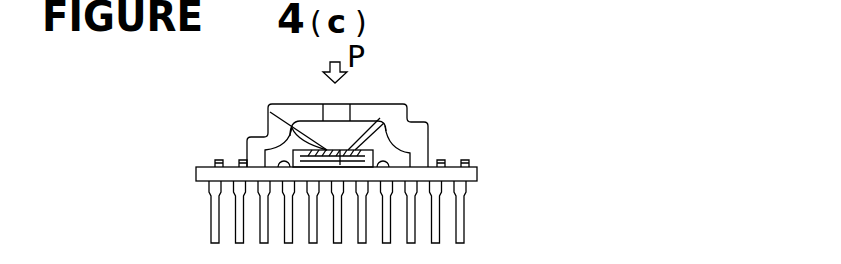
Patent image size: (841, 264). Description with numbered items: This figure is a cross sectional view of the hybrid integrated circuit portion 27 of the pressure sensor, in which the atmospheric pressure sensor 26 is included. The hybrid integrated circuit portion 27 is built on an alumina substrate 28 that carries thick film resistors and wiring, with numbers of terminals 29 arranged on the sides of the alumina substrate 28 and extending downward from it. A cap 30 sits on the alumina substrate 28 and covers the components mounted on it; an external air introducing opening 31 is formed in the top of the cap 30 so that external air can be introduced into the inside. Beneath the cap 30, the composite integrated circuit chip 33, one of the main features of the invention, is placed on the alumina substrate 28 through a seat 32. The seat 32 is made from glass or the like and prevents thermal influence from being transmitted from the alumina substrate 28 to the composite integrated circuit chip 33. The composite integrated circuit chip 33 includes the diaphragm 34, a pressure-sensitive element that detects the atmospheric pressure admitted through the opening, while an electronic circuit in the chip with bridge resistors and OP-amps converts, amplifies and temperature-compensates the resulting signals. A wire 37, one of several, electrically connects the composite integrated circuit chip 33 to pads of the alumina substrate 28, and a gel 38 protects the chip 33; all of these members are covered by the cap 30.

The atmospheric pressure sensor 26 is at (407, 108).
The hybrid integrated circuit portion 27 is at (482, 176).
The alumina substrate 28 is at (453, 167).
The terminals 29 is at (466, 222).
The cap 30 is at (408, 124).
The external air introducing opening 31 is at (342, 112).
The seat 32 is at (294, 110).
The composite integrated circuit chip 33 is at (386, 111).
The diaphragm 34 is at (271, 108).
The wire 37 is at (268, 148).
The gel 38 is at (292, 128).